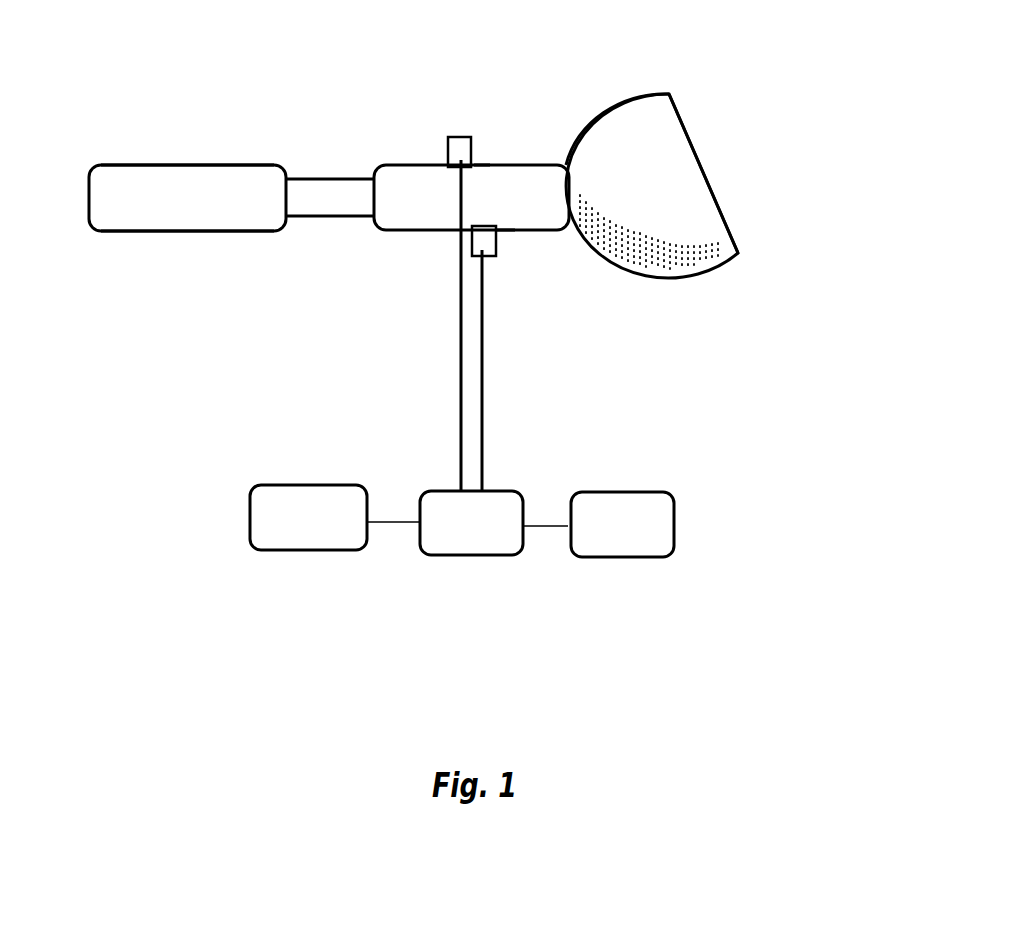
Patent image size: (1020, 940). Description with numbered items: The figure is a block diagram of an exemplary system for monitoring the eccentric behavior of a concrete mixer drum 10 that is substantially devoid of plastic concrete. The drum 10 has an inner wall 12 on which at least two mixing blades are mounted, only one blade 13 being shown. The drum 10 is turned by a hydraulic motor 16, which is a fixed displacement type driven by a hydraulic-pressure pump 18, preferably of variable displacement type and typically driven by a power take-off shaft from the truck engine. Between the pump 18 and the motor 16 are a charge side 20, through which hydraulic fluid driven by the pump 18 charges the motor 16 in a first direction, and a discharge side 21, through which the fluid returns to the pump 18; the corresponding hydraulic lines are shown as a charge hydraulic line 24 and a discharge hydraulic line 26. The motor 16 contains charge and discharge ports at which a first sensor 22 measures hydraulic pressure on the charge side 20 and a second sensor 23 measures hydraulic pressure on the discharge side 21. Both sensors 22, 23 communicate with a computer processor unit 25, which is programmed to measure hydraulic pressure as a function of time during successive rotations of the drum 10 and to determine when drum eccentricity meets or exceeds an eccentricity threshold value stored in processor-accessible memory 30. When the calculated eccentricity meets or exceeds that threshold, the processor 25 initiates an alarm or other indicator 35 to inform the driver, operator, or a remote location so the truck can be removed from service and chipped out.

The concrete mixer drum 10 is at (690, 133).
The inner wall 12 is at (632, 105).
The mixing blade 13 is at (640, 183).
The motor 16 is at (422, 238).
The hydraulic-pressure pump 18 is at (172, 184).
The charge side 20 is at (214, 162).
The discharge side 21 is at (194, 242).
The first sensor 22 is at (445, 132).
The second sensor 23 is at (508, 250).
The hydraulic line 24 is at (312, 172).
The computer processor unit 25 is at (460, 535).
The hydraulic line 26 is at (325, 223).
The processor-accessible memory 30 is at (290, 528).
The alarm or other indicator 35 is at (623, 535).